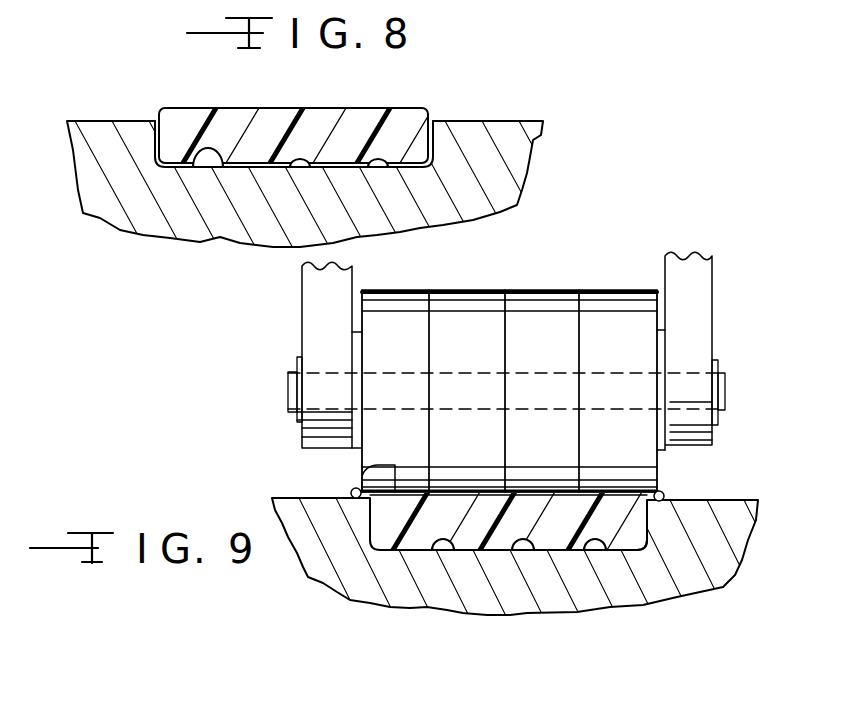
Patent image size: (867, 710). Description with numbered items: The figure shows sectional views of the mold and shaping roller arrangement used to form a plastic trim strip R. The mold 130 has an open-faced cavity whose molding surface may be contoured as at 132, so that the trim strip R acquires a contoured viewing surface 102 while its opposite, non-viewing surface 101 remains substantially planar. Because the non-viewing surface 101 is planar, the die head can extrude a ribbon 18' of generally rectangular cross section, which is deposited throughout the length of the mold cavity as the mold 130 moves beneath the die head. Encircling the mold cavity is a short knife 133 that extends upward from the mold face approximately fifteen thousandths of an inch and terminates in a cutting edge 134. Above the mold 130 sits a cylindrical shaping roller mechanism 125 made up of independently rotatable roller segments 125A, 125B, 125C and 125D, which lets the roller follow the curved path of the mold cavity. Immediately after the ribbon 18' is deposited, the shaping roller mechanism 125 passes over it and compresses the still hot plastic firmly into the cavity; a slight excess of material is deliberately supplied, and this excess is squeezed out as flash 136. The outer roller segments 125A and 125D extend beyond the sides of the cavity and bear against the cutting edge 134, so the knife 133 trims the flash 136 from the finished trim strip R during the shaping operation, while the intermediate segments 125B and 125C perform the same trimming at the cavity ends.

In FIG. 8, the knife 133 is at (154, 119).
In FIG. 8, the cutting edge 134 is at (155, 113).
In FIG. 8, the ribbon 18' is at (295, 110).
In FIG. 8, the contoured molding surface 132 is at (200, 167).
In FIG. 9, the contoured molding surface 132 is at (535, 535).
In FIG. 9, the shaping roller mechanism 125 is at (593, 268).
In FIG. 9, the roller segment 125A is at (420, 357).
In FIG. 9, the roller segment 125B is at (492, 357).
In FIG. 9, the roller segment 125C is at (568, 357).
In FIG. 9, the roller segment 125D is at (643, 357).
In FIG. 9, the non-viewing surface 101 is at (367, 468).
In FIG. 9, the mold 130 is at (693, 522).
In FIG. 9, the contoured viewing surface 102 is at (410, 552).
In FIG. 9, the flash 136 is at (347, 492).
In FIG. 9, the trim strip R is at (630, 540).